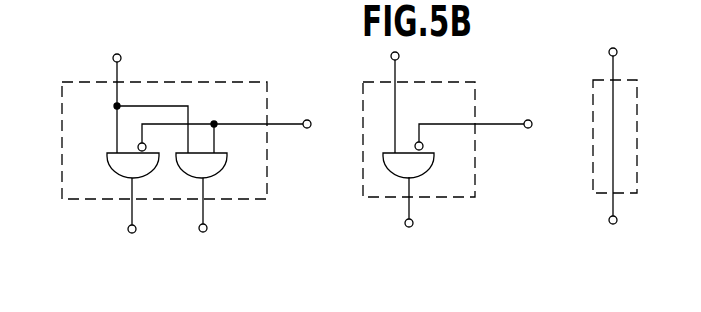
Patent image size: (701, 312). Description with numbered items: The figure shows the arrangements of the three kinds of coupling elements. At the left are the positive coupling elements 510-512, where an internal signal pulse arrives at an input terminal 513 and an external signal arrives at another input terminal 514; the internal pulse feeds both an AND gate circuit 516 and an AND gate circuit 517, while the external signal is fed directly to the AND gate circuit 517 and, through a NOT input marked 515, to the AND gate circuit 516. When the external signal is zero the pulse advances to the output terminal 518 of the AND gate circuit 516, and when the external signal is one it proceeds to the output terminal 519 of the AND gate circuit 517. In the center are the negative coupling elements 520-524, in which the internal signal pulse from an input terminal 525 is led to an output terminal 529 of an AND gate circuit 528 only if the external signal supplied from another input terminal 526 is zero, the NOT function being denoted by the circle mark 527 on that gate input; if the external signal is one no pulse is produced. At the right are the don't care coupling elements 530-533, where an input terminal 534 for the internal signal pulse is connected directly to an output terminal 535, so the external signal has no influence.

The positive coupling elements 510-512 is at (97, 200).
The input terminal 513 is at (121, 58).
The input terminal 514 is at (307, 120).
The NOT mark 515 is at (145, 144).
The AND gate circuit 516 is at (107, 166).
The AND gate circuit 517 is at (226, 166).
The output terminal 518 is at (133, 233).
The output terminal 519 is at (204, 232).
The negative coupling elements 520-524 is at (437, 198).
The input terminal 525 is at (399, 57).
The input terminal 526 is at (527, 120).
The NOT mark 527 is at (423, 144).
The AND gate circuit 528 is at (431, 168).
The output terminal 529 is at (405, 223).
The don't care coupling elements 530-533 is at (627, 194).
The input terminal 534 is at (617, 53).
The output terminal 535 is at (609, 221).